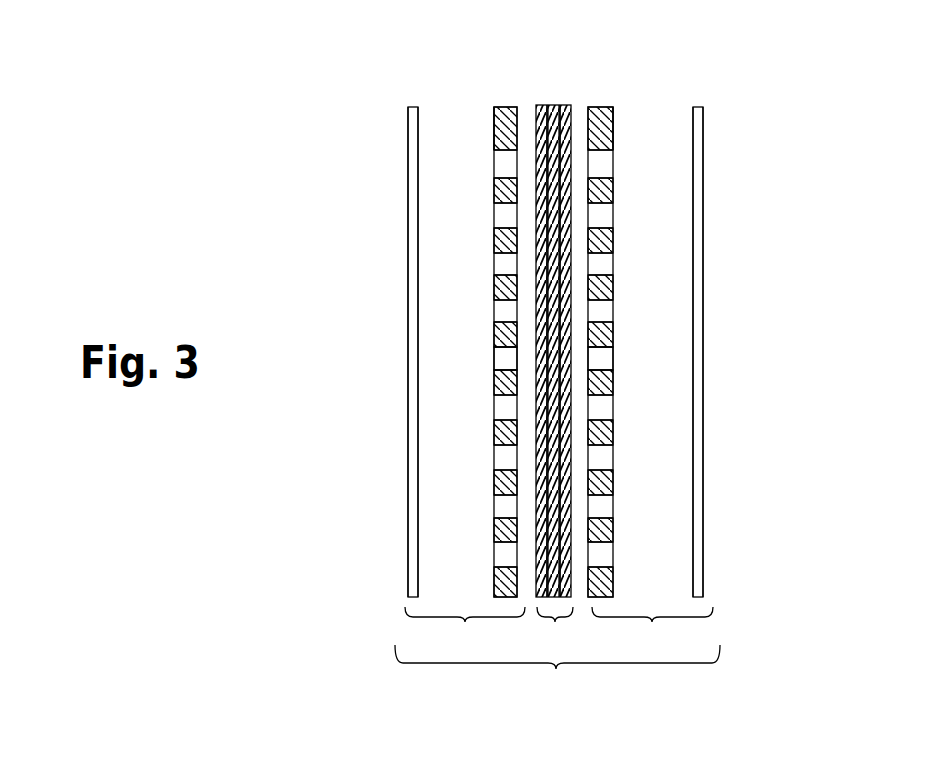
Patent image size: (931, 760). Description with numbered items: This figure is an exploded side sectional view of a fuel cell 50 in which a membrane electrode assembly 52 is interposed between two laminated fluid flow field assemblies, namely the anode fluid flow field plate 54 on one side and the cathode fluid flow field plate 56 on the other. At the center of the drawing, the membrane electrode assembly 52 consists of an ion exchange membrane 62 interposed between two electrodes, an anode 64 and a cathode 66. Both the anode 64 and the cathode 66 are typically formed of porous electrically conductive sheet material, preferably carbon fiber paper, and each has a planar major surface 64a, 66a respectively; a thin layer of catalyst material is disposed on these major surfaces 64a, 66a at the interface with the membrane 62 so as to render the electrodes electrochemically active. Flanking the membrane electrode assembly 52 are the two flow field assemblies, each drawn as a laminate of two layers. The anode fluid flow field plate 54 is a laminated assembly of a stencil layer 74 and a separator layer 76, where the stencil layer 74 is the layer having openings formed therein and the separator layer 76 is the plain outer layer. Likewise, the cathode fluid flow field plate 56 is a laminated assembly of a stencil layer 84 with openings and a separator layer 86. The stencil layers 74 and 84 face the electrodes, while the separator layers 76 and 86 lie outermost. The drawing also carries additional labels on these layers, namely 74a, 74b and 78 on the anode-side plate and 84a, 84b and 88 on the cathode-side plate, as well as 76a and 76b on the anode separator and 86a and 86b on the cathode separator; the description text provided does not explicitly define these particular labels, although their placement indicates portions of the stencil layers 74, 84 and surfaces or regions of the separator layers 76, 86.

The fuel cell 50 is at (736, 344).
The membrane electrode assembly 52 is at (557, 630).
The anode fluid flow field plate 54 is at (652, 629).
The cathode fluid flow field plate 56 is at (465, 632).
The ion exchange membrane 62 is at (556, 105).
The anode 64 is at (572, 105).
The planar major surface of anode 64a is at (562, 105).
The cathode 66 is at (539, 104).
The planar major surface of cathode 66a is at (548, 105).
The stencil layer 74 is at (592, 106).
The right plate inner portion 74a is at (613, 128).
The right plate opening 74b is at (613, 266).
The separator layer 76 is at (697, 106).
The right end plate outer surface 76a is at (703, 217).
The right end plate inner surface 76b is at (693, 255).
The right plate spacer 78 is at (613, 362).
The stencil layer 84 is at (497, 106).
The left plate inner portion 84a is at (494, 125).
The left plate opening 84b is at (495, 266).
The separator layer 86 is at (408, 106).
The left end plate outer surface 86a is at (408, 283).
The left end plate inner surface 86b is at (418, 217).
The left plate spacer 88 is at (494, 362).